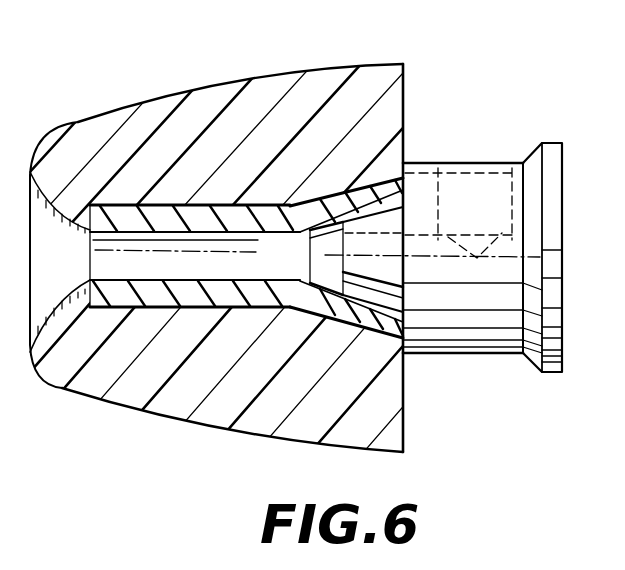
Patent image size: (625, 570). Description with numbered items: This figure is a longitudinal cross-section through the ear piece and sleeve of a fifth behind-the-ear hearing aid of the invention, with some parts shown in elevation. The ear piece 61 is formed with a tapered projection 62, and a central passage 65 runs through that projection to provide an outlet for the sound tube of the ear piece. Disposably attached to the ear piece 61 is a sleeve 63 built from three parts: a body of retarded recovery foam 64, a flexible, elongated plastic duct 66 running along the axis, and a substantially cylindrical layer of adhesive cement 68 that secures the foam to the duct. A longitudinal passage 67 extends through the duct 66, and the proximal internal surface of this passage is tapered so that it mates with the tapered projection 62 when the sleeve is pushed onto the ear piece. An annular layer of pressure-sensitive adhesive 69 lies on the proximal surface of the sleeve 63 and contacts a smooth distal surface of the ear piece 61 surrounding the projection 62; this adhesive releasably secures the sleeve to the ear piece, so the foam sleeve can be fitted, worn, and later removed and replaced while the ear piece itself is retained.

The ear piece 61 is at (513, 356).
The tapered projection 62 is at (310, 237).
The sleeve 63 is at (266, 80).
The retarded recovery foam 64 is at (198, 102).
The central passage 65 is at (446, 240).
The plastic duct 66 is at (127, 212).
The longitudinal passage 67 is at (323, 241).
The layer of adhesive cement 68 is at (148, 307).
The layer of pressure-sensitive adhesive 69 is at (407, 162).